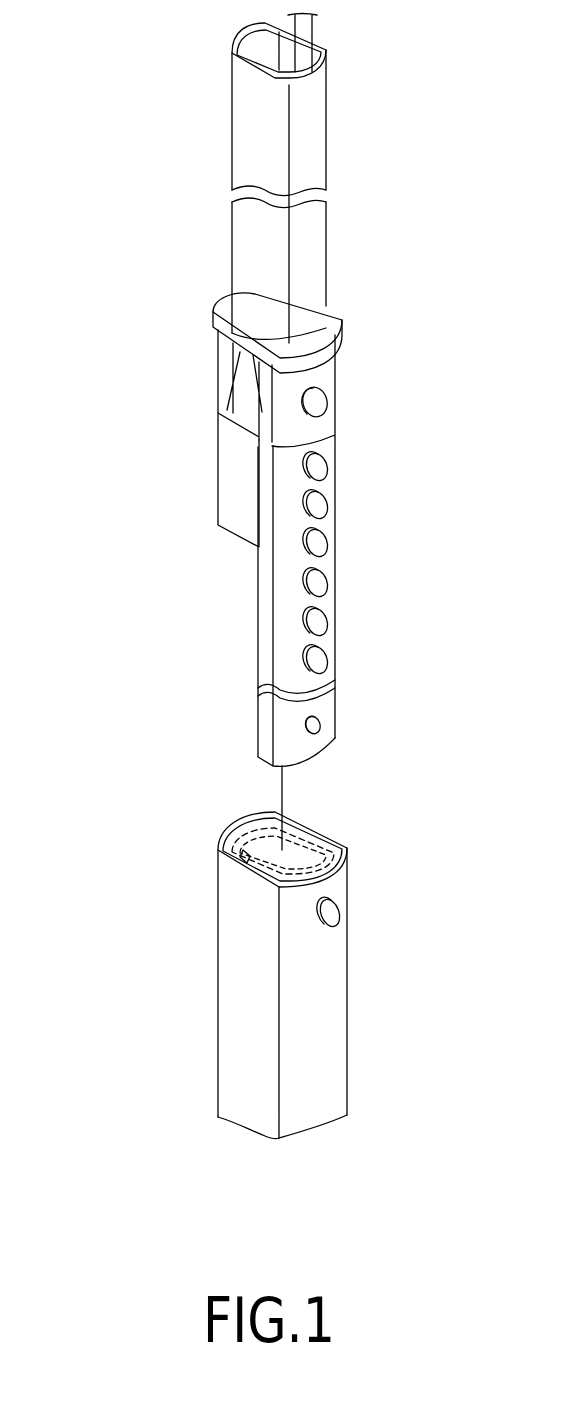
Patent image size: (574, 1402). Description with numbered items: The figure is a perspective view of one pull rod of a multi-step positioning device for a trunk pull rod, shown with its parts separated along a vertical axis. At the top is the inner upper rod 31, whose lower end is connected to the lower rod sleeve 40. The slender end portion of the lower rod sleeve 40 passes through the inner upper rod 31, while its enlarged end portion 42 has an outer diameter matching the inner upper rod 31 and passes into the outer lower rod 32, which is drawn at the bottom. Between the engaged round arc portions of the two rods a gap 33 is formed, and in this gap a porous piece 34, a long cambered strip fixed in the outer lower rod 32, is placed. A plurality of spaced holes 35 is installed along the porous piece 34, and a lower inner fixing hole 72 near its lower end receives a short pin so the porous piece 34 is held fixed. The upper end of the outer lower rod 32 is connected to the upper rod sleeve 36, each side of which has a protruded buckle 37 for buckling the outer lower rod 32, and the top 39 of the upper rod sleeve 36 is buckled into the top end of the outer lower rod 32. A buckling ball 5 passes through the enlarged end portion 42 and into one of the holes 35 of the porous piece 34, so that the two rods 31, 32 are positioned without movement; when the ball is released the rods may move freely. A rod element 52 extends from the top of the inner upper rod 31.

The rod 52 is at (305, 50).
The inner upper rod 31 is at (302, 265).
The top of the upper rod sleeve 39 is at (337, 320).
The upper rod sleeve 36 is at (330, 380).
The protruded buckle 37 is at (316, 405).
The buckling ball 5 is at (320, 467).
The porous piece 34 is at (330, 565).
The holes 35 is at (316, 630).
The lower inner fixing hole 72 is at (316, 725).
The gap 33 is at (330, 835).
The outer lower rod 32 is at (338, 970).
The lower rod sleeve 40 is at (205, 472).
The enlarged end portion 42 is at (240, 545).